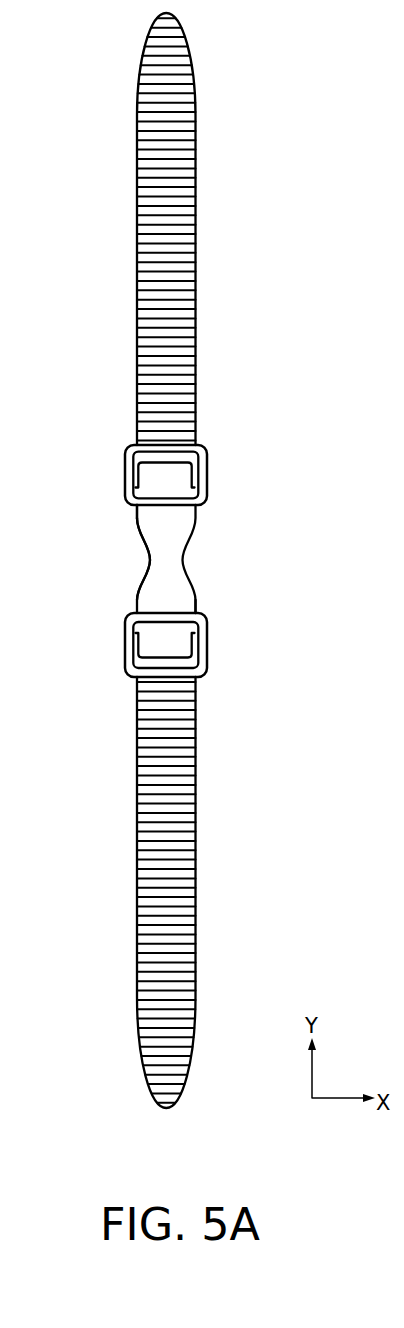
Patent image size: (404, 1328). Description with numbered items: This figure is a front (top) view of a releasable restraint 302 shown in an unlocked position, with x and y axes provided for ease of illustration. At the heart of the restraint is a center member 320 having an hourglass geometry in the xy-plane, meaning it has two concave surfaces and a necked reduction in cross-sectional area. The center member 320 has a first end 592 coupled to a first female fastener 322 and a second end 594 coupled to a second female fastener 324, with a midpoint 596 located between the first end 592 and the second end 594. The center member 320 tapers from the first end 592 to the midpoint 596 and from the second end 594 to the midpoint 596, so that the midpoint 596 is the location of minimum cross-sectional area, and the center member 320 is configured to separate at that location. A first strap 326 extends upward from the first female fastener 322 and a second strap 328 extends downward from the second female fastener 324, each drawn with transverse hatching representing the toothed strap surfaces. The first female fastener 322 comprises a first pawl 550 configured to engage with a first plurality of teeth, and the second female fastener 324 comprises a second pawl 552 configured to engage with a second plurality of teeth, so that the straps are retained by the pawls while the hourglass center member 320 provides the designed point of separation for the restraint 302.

The releasable restraint 302 is at (174, 560).
The center member 320 is at (198, 529).
The first female fastener 322 is at (124, 476).
The second female fastener 324 is at (124, 657).
The first strap 326 is at (137, 207).
The second strap 328 is at (195, 893).
The first pawl 550 is at (191, 464).
The second pawl 552 is at (182, 660).
The first end 592 is at (123, 514).
The second end 594 is at (209, 606).
The midpoint 596 is at (137, 563).